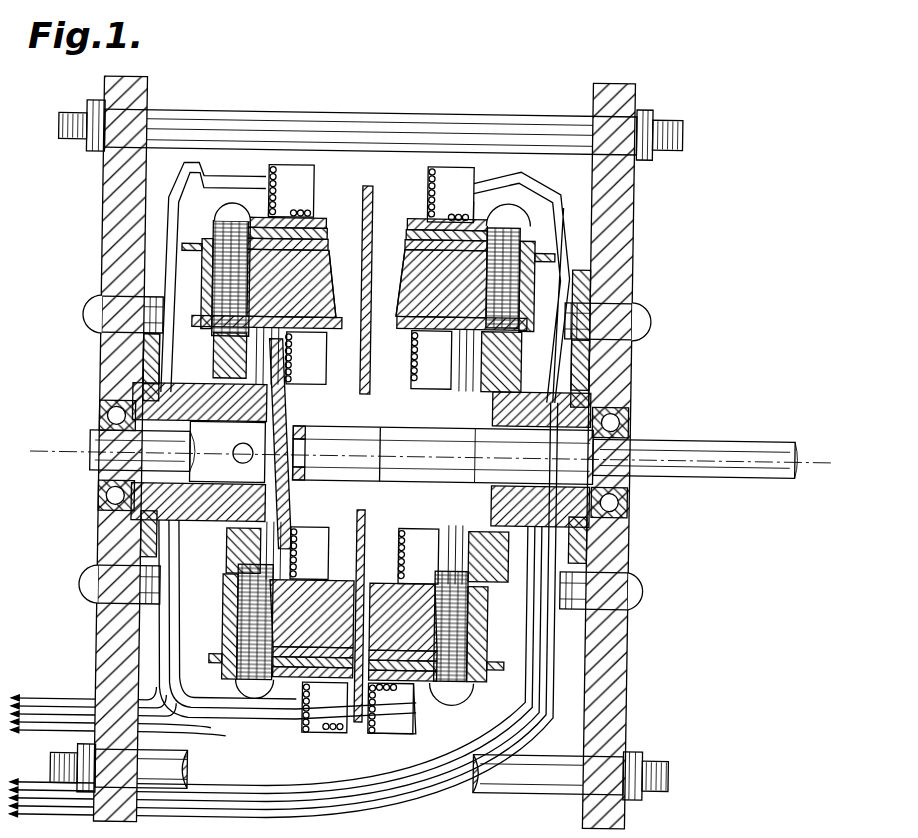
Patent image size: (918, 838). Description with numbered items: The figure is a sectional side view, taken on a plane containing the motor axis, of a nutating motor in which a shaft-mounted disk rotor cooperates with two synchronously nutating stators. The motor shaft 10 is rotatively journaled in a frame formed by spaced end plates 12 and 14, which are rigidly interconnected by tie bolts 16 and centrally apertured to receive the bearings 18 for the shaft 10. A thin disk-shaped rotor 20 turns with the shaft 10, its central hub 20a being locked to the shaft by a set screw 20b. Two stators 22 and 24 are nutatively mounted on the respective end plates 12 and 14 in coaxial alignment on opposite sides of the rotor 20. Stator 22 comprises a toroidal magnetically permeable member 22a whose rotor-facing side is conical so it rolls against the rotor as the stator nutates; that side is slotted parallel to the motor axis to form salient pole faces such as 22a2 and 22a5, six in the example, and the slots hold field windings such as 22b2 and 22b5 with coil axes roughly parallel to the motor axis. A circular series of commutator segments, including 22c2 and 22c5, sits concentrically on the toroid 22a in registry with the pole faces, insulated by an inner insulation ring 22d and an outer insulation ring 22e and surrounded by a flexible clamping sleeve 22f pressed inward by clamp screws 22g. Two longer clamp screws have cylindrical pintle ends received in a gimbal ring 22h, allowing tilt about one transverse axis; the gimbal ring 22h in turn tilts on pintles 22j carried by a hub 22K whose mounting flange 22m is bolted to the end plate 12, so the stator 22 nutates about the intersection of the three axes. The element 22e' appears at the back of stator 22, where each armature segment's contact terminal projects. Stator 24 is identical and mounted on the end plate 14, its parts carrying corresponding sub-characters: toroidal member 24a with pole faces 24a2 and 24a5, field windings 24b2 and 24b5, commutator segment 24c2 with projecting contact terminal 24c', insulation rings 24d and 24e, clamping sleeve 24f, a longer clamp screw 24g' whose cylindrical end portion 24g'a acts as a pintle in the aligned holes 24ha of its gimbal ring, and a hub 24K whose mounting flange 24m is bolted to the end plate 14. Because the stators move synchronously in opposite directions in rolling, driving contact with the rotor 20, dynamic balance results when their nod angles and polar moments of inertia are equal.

The motor shaft 10 is at (432, 455).
The end plate 12 is at (630, 222).
The end plate 14 is at (99, 237).
The tie bolts 16 is at (371, 128).
The bearings 18 is at (107, 421).
The rotor 20 is at (367, 180).
The central hub 20a is at (426, 430).
The set screw 20b is at (386, 430).
The stator 22 is at (347, 458).
The toroidal magnetically permeable member 22a is at (406, 276).
The salient pole face 22a2 is at (398, 305).
The salient pole face 22a5 is at (436, 590).
The field winding 22b2 is at (424, 173).
The field winding 22b5 is at (402, 727).
The commutator segment 22c2 is at (416, 233).
The commutator segment 22c5 is at (365, 722).
The inner insulation ring 22d is at (404, 243).
The outer insulation ring 22e is at (434, 198).
The right flange 22e' is at (569, 236).
The clamping sleeve 22f is at (536, 250).
The clamp screws 22g is at (505, 224).
The gimbal ring 22h is at (492, 582).
The pintles 22j is at (476, 484).
The hub 22K is at (536, 424).
The mounting flange 22m is at (617, 356).
The stator 24 is at (217, 420).
The toroidal magnetically permeable member 24a is at (325, 268).
The salient pole face 24a2 is at (332, 305).
The salient pole face 24a5 is at (300, 585).
The field winding 24b2 is at (311, 173).
The field winding 24b5 is at (310, 733).
The contact terminal 24c' is at (185, 232).
The commutator segment 24c2 is at (318, 223).
The inner insulation ring 24d is at (325, 245).
The outer insulation ring 24e is at (309, 190).
The clamping sleeve 24f is at (268, 218).
The longer clamp screw 24g' is at (222, 457).
The cylindrical end portion 24g'a is at (155, 451).
The aligned holes 24ha is at (279, 368).
The hub 24K is at (222, 423).
The mounting flange 24m is at (141, 357).